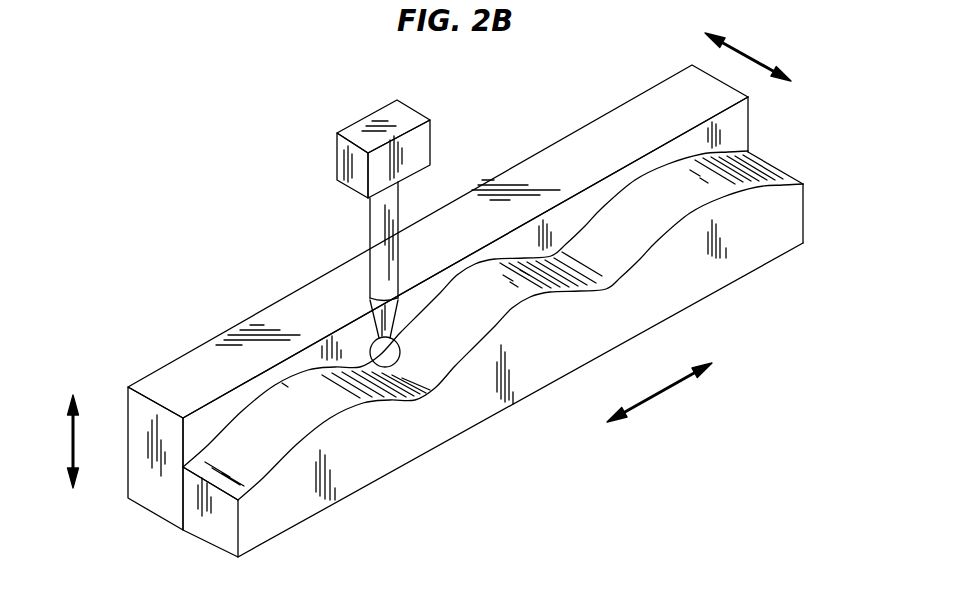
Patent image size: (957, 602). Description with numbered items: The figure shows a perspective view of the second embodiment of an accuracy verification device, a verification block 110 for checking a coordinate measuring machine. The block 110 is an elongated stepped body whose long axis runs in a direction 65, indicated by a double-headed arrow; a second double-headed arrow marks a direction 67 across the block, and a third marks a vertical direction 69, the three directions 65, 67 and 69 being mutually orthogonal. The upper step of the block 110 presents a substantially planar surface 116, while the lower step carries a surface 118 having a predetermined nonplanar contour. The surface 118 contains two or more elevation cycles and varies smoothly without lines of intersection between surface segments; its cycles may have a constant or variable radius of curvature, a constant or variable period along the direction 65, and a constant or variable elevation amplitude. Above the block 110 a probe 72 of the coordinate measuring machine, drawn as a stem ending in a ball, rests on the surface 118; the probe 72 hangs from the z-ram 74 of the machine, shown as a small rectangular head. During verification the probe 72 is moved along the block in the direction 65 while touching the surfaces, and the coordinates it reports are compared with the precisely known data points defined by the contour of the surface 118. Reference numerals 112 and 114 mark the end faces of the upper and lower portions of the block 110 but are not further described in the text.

The direction 65 is at (668, 392).
The direction 67 is at (752, 50).
The direction 69 is at (72, 452).
The probe 72 is at (364, 337).
The z-ram 74 is at (420, 137).
The verification block 110 is at (164, 357).
The end face of the block 112 is at (155, 493).
The lower step end face 114 is at (210, 532).
The substantially planar surface 116 is at (198, 424).
The surface having a predetermined nonplanar contour 118 is at (608, 274).